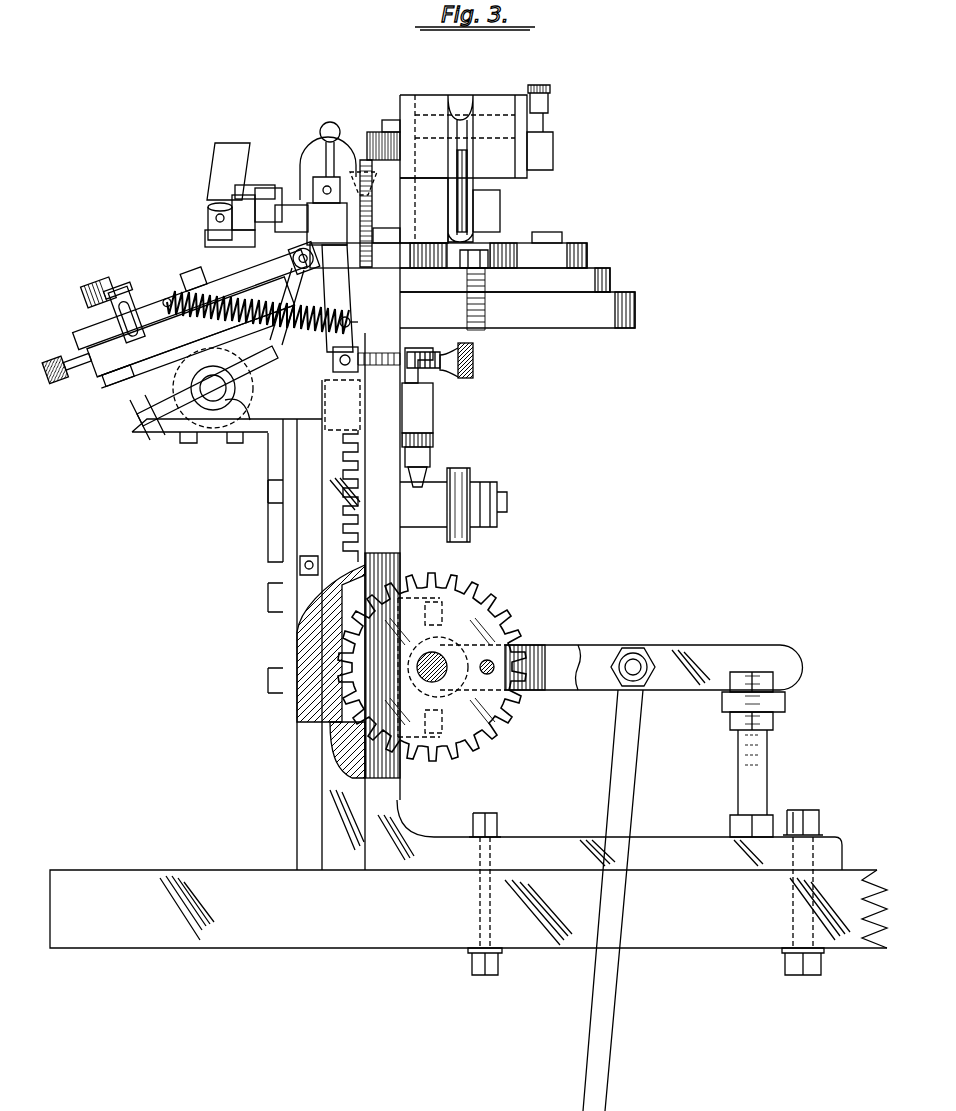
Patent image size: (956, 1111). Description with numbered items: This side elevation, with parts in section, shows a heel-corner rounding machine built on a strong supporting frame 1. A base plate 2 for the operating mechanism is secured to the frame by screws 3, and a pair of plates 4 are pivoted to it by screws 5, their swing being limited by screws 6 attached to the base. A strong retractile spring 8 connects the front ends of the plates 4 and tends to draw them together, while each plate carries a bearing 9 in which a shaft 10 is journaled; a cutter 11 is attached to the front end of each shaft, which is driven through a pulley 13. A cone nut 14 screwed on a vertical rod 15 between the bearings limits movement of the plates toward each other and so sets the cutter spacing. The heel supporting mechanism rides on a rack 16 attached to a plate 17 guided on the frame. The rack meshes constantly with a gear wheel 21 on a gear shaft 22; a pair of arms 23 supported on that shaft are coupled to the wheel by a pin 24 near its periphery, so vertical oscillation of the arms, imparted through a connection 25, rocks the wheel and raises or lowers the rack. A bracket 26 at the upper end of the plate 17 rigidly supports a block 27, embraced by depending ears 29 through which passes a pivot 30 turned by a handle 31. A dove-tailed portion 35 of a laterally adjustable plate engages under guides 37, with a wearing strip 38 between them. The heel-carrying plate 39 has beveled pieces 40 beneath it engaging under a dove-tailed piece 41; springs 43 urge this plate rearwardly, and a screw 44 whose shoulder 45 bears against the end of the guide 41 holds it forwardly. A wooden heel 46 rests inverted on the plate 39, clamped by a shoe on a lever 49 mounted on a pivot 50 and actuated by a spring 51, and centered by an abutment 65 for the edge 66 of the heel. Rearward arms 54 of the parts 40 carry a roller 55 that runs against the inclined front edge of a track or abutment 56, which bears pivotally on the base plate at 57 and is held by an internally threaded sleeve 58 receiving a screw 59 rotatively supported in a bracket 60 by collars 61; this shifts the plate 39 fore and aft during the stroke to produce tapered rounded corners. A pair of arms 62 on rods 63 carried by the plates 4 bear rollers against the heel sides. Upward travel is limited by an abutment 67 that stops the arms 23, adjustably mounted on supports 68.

The supporting frame 1 is at (618, 312).
The base plate 2 is at (598, 280).
The screws 3 is at (493, 262).
The plates 4 is at (583, 256).
The screws 5 is at (555, 236).
The screws 6 is at (392, 237).
The retractile spring 8 is at (333, 122).
The bearing 9 is at (425, 213).
The shaft 10 is at (487, 224).
The cutter 11 is at (247, 188).
The pulley 13 is at (457, 217).
The cone nut 14 is at (388, 122).
The vertical rod 15 is at (362, 138).
The rack 16 is at (315, 685).
The plate 17 is at (300, 615).
The gear wheel 21 is at (490, 605).
The gear shaft 22 is at (498, 640).
The arms 23 is at (690, 655).
The pin 24 is at (488, 675).
The connection 25 is at (598, 1000).
The bracket 26 is at (275, 500).
The block 27 is at (228, 420).
The depending ears 29 is at (212, 403).
The pivot 30 is at (213, 430).
The handle 31 is at (165, 435).
The dove-tailed portion 35 is at (150, 412).
The guides 37 is at (105, 400).
The wearing strip 38 is at (262, 365).
The plate 39 is at (135, 295).
The beveled pieces 40 is at (128, 300).
The dove-tailed piece 41 is at (100, 378).
The springs 43 is at (280, 342).
The screw 44 is at (58, 385).
The shoulder 45 is at (95, 340).
The wooden heel 46 is at (225, 160).
The lever 49 is at (162, 298).
The pivot 50 is at (190, 265).
The spring 51 is at (95, 285).
The arms 54 is at (272, 310).
The roller 55 is at (305, 272).
The track or abutment 56 is at (312, 140).
The pivotal bearing 57 is at (356, 302).
The internally threaded sleeve 58 is at (340, 368).
The screw 59 is at (474, 360).
The bracket 60 is at (418, 380).
The collars 61 is at (445, 370).
The arms 62 is at (232, 212).
The rods 63 is at (212, 232).
The abutment 65 is at (290, 205).
The edge 66 is at (266, 195).
The abutment 67 is at (787, 700).
The supports 68 is at (760, 760).